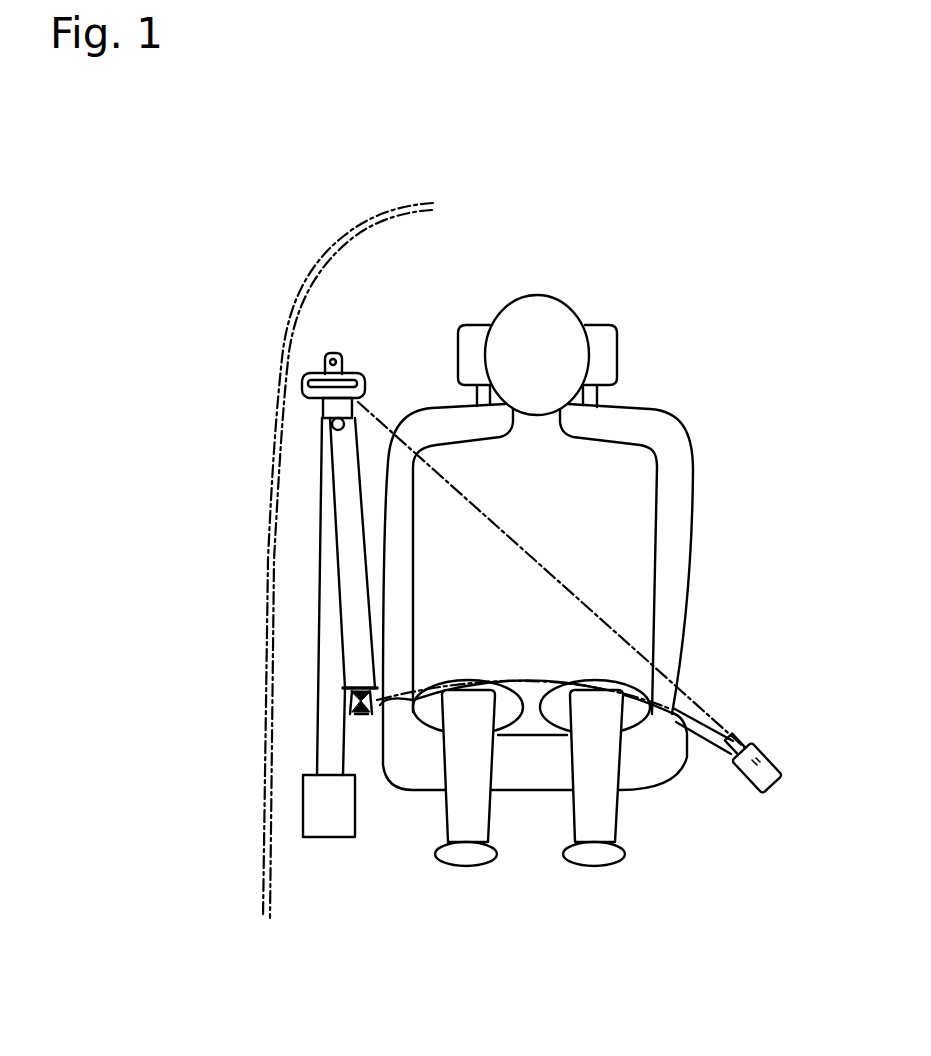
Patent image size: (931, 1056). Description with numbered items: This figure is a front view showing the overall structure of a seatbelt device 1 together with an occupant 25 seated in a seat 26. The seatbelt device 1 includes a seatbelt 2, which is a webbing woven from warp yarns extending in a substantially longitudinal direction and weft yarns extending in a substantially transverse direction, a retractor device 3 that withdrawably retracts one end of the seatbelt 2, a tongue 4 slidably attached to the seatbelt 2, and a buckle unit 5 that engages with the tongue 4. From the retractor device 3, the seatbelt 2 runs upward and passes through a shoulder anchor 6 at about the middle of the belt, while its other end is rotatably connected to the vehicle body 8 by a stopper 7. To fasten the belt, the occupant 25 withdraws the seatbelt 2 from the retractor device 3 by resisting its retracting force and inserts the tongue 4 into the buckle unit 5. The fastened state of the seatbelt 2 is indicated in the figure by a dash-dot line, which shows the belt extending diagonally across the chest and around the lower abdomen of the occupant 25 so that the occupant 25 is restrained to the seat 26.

The seatbelt device 1 is at (313, 622).
The seatbelt 2 is at (323, 733).
The retractor device 3 is at (317, 823).
The tongue 4 is at (325, 405).
The buckle unit 5 is at (770, 765).
The shoulder anchor 6 is at (343, 373).
The stopper 7 is at (368, 718).
The vehicle body 8 is at (290, 317).
The occupant 25 is at (535, 295).
The seat 26 is at (695, 515).